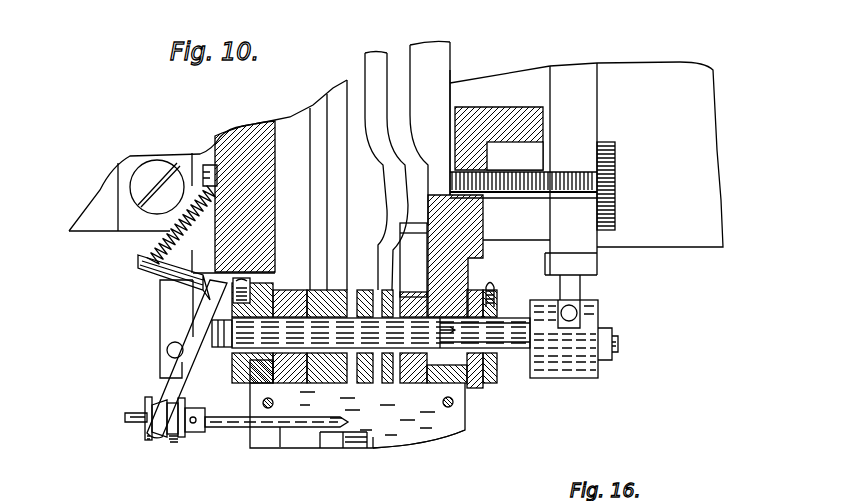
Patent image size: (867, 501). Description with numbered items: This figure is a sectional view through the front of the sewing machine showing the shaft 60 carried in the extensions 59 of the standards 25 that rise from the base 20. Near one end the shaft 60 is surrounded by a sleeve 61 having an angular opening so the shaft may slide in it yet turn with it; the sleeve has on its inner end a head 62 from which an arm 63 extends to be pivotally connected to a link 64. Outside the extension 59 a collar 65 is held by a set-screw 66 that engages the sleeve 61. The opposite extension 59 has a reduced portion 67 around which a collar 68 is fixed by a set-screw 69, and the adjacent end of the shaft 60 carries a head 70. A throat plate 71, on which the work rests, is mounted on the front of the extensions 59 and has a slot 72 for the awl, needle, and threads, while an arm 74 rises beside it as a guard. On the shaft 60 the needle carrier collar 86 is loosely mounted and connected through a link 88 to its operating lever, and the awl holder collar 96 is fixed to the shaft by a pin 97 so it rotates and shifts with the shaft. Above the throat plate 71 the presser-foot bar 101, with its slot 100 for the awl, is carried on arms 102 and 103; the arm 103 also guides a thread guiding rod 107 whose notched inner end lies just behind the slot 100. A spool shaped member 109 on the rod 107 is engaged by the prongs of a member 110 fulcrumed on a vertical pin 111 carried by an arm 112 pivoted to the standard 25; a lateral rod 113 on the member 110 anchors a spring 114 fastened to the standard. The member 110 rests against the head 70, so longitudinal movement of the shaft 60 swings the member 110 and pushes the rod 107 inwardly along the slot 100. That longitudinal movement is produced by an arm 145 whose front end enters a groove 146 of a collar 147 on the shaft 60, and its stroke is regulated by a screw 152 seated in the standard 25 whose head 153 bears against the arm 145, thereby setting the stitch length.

The base 20 is at (638, 72).
The standard 25 is at (245, 133).
The extension 59 is at (293, 370).
The shaft 60 is at (381, 333).
The sleeve 61 is at (497, 360).
The head 62 is at (412, 377).
The arm 63 is at (450, 260).
The link 64 is at (410, 187).
The collar 65 is at (492, 382).
The set-screw 66 is at (493, 283).
The reduced portion 67 is at (233, 355).
The collar 68 is at (233, 377).
The set-screw 69 is at (230, 285).
The head 70 is at (212, 328).
The throat plate 71 is at (403, 435).
The slot 72 is at (380, 442).
The arm 74 is at (350, 455).
The collar 86 is at (352, 289).
The link 88 is at (337, 227).
The collar 96 is at (383, 393).
The pin 97 is at (388, 213).
The slot 100 is at (295, 430).
The presser-foot bar 101 is at (267, 440).
The arm 102 is at (450, 367).
The arm 103 is at (260, 385).
The thread guiding rod 107 is at (127, 413).
The spool shaped member 109 is at (153, 433).
The member 110 is at (178, 367).
The pin 111 is at (166, 350).
The arm 112 is at (172, 317).
The rod 113 is at (140, 263).
The spring 114 is at (170, 235).
The arm 145 is at (580, 117).
The groove 146 is at (573, 322).
The collar 147 is at (600, 372).
The screw 152 is at (513, 177).
The head 153 is at (615, 183).